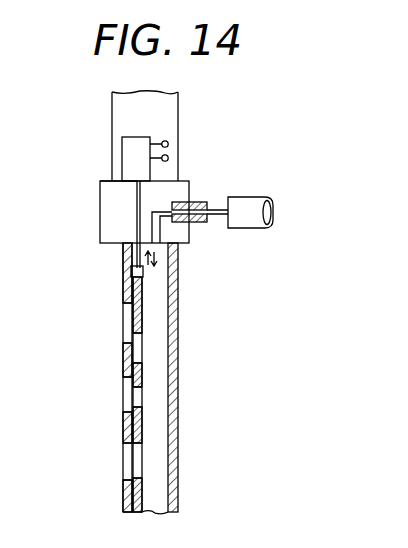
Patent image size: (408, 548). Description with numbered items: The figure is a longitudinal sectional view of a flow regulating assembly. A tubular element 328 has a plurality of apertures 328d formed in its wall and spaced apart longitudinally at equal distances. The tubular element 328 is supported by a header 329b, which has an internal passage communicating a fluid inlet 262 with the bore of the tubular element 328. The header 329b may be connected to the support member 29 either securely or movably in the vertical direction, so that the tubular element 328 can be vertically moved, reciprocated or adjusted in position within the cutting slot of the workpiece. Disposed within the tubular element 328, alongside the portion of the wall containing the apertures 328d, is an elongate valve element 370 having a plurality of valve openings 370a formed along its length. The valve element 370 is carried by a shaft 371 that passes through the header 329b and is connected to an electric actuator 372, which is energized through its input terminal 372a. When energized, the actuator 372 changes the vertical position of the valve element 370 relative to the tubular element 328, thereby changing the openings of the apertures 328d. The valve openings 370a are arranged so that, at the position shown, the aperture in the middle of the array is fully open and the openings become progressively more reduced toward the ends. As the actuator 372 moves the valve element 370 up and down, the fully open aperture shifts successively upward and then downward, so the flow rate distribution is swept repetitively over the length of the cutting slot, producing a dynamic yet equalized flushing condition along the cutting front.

The support member 29 is at (170, 104).
The electric actuator 372 is at (128, 143).
The terminals 372a is at (172, 149).
The header 329b is at (102, 192).
The shaft 371 is at (118, 217).
The fluid inlet 262 is at (210, 197).
The valve element 370 is at (140, 291).
The valve openings 370a is at (142, 352).
The tubular element 328 is at (180, 446).
The apertures 328d is at (125, 323).